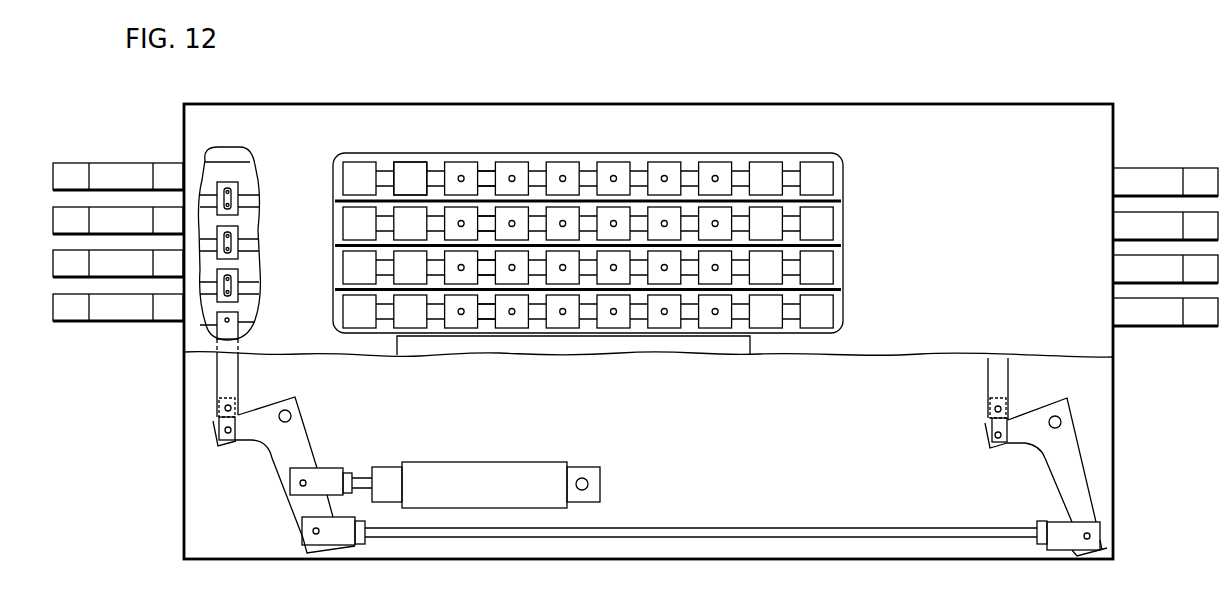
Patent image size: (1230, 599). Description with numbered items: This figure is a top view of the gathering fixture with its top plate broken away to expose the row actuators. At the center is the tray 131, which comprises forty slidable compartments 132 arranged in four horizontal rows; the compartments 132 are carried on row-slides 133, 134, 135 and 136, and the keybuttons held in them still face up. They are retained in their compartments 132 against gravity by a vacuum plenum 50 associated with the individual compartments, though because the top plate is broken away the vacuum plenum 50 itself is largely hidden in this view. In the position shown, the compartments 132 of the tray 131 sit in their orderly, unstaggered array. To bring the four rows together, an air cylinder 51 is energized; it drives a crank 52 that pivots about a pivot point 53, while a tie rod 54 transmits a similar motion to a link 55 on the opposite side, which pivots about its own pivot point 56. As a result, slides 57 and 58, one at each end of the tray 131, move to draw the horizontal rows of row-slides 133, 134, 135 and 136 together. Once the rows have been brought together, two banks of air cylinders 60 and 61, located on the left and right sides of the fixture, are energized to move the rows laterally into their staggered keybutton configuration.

The vacuum plenum 50 is at (721, 351).
The air cylinder 51 is at (455, 470).
The crank 52 is at (300, 449).
The pivot point 53 is at (290, 413).
The tie rod 54 is at (712, 527).
The link 55 is at (1060, 480).
The pivot point 56 is at (1055, 422).
The slide 57 is at (227, 380).
The slide 58 is at (997, 383).
The bank of air cylinders 60 is at (127, 160).
The bank of air cylinders 61 is at (1159, 163).
The tray 131 is at (621, 171).
The slidable compartment 132 is at (401, 171).
The row-slide 133 is at (484, 177).
The row-slide 134 is at (487, 219).
The row-slide 135 is at (487, 267).
The row-slide 136 is at (486, 308).